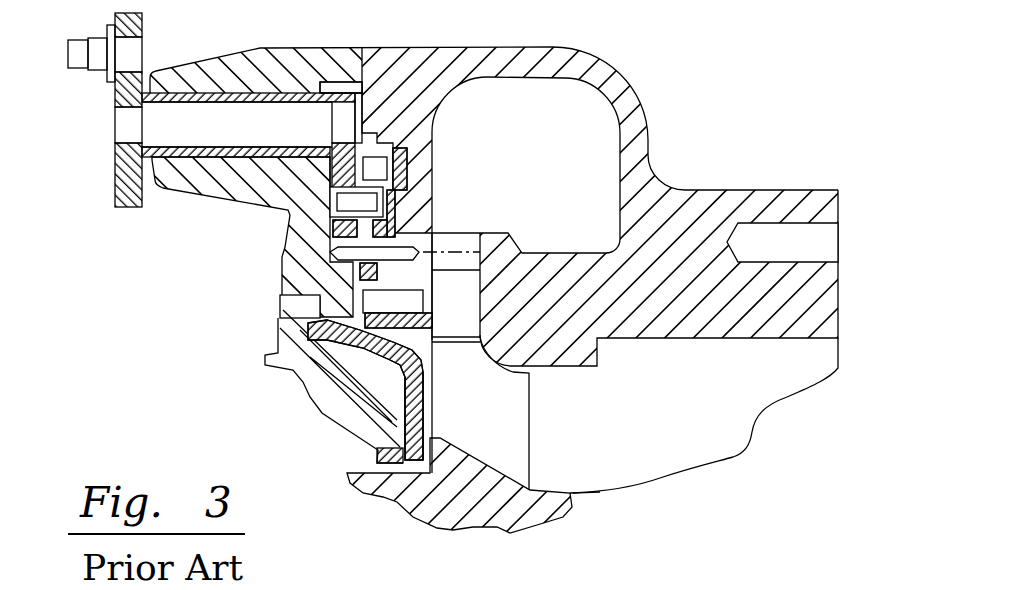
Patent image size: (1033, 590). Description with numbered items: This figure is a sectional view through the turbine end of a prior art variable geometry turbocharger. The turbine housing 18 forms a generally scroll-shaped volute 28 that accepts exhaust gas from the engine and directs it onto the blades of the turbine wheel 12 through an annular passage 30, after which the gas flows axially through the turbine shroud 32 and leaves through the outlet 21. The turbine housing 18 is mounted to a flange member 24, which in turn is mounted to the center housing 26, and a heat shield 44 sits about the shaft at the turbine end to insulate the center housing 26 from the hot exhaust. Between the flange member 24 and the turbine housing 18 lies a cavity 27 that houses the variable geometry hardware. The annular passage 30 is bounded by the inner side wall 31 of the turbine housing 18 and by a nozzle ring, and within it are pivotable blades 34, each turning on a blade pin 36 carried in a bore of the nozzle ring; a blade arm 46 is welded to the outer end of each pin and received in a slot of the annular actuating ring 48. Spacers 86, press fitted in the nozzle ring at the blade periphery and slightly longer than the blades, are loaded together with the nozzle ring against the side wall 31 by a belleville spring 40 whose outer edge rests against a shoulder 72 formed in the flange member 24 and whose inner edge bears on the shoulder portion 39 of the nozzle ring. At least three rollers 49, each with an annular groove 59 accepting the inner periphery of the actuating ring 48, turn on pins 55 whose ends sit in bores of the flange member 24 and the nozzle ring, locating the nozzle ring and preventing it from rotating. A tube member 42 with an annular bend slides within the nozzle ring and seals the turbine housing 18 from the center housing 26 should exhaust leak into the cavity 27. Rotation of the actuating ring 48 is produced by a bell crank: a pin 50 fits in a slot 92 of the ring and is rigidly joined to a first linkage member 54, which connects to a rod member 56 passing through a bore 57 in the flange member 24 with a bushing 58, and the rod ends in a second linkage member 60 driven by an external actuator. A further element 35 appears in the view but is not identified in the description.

The turbine wheel 12 is at (567, 468).
The turbine housing 18 is at (527, 47).
The outlet 21 is at (707, 405).
The flange member 24 is at (253, 50).
The center housing 26 is at (300, 392).
The cavity 27 is at (343, 80).
The volute 28 is at (558, 160).
The annular passage 30 is at (455, 233).
The inner side wall 31 is at (484, 243).
The turbine shroud 32 is at (558, 413).
The pivotable blades 34 is at (447, 312).
The cavity 35 is at (478, 312).
The blade pin 36 is at (335, 321).
The shoulder portion 39 is at (432, 195).
The belleville spring 40 is at (430, 142).
The tube member 42 is at (360, 417).
The heat shield 44 is at (423, 395).
The blade arm 46 is at (320, 383).
The actuating ring 48 is at (432, 118).
The rollers 49 is at (345, 268).
The pin 50 is at (347, 205).
The first linkage member 54 is at (330, 173).
The pins 55 is at (330, 252).
The rod member 56 is at (192, 123).
The bore 57 is at (290, 133).
The bushing 58 is at (147, 83).
The annular groove 59 is at (385, 302).
The second linkage member 60 is at (113, 98).
The shoulder 72 is at (373, 143).
The spacers 86 is at (468, 243).
The slot 92 is at (430, 172).